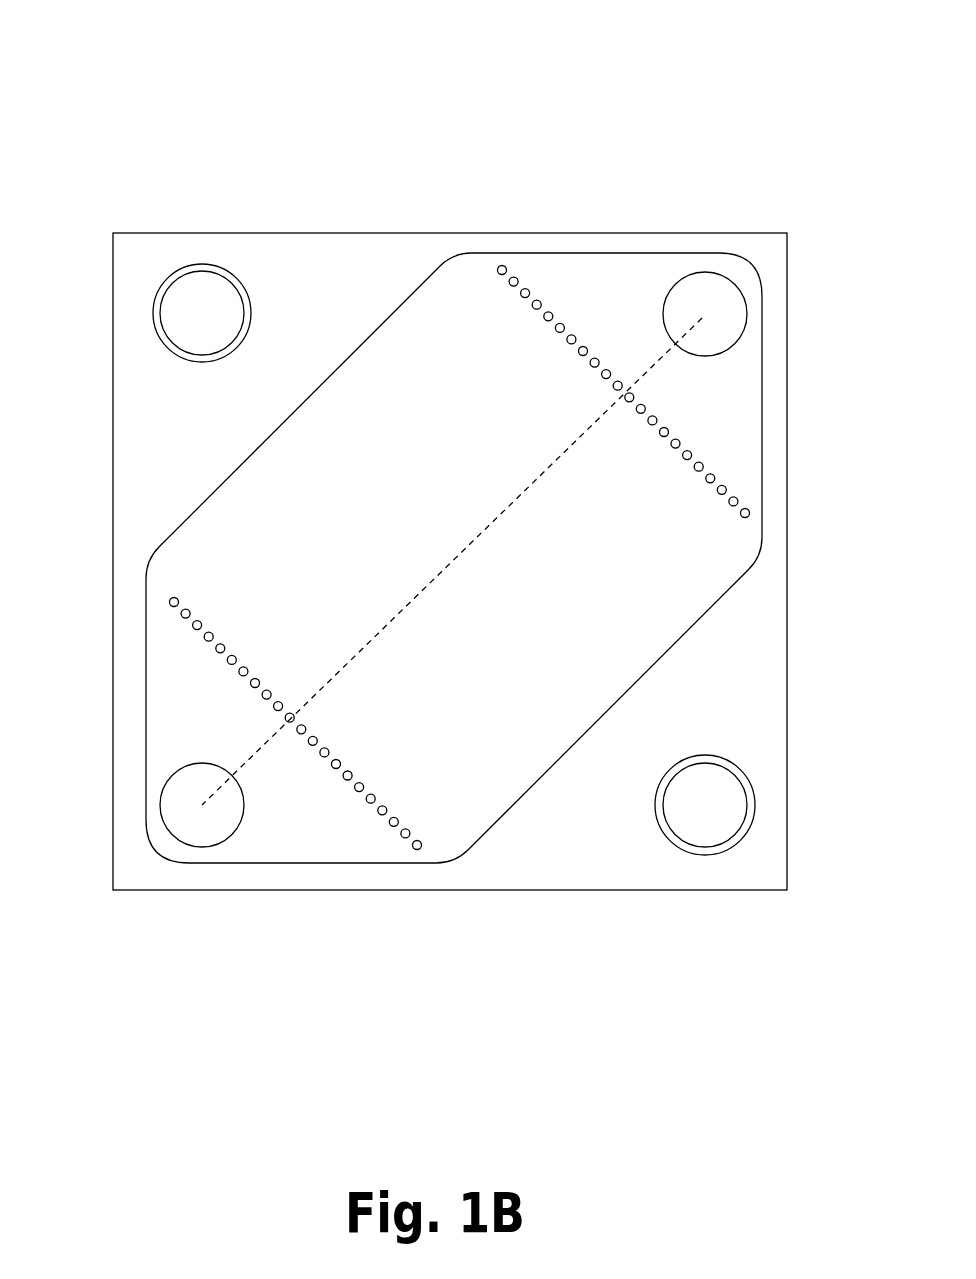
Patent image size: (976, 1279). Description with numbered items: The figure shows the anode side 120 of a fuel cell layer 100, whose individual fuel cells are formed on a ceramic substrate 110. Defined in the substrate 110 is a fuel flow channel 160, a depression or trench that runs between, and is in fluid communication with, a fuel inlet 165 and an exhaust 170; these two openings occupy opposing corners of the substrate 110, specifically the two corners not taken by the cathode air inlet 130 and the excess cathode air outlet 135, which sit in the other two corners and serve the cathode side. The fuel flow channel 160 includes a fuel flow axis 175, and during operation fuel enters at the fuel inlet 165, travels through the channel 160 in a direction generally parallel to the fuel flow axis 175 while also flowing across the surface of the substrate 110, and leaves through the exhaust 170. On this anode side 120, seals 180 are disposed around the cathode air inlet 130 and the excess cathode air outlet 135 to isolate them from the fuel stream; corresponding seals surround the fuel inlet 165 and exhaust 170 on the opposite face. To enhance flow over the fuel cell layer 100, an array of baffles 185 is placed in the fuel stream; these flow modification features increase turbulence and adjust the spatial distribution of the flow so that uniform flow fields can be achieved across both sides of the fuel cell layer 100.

The fuel cell layer 100 is at (218, 100).
The ceramic substrate 110 is at (335, 312).
The anode side 120 is at (760, 707).
The cathode air inlet 130 is at (195, 290).
The excess cathode air outlet 135 is at (720, 807).
The fuel flow channel 160 is at (454, 628).
The fuel inlet 165 is at (703, 295).
The exhaust 170 is at (201, 825).
The fuel flow axis 175 is at (266, 762).
The seals 180 is at (152, 312).
The array of baffles 185 is at (168, 605).